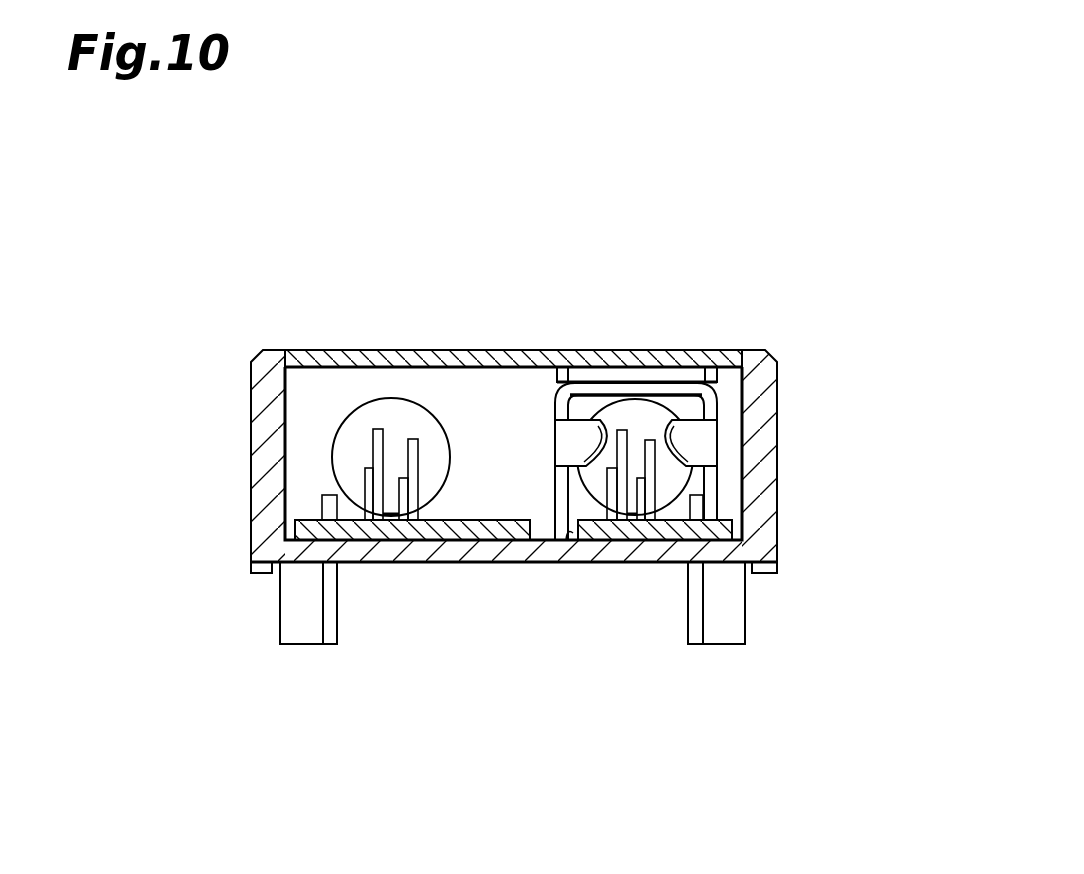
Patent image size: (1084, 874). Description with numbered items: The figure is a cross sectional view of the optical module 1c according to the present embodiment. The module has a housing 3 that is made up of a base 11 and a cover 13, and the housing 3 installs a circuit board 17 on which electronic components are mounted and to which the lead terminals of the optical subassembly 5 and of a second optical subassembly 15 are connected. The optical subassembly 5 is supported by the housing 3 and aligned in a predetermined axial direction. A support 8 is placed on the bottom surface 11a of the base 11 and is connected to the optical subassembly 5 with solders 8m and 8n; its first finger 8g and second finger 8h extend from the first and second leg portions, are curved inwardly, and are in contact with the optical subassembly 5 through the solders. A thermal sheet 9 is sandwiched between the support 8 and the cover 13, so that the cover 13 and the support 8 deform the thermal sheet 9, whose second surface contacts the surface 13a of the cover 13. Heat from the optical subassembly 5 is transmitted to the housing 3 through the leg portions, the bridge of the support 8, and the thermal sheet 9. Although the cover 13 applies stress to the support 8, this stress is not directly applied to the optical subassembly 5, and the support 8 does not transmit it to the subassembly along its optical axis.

The optical module 1c is at (781, 159).
The housing 3 is at (872, 283).
The optical subassembly 5 is at (677, 483).
The support 8 is at (596, 402).
The first finger 8g is at (583, 430).
The second finger 8h is at (687, 432).
The solder 8m is at (601, 404).
The solder 8n is at (664, 412).
The thermal sheet 9 is at (697, 377).
The base 11 is at (762, 406).
The bottom surface 11a is at (567, 535).
The cover 13 is at (735, 352).
The surface 13a is at (480, 368).
The optical subassembly 15 is at (428, 477).
The circuit board 17 is at (515, 522).